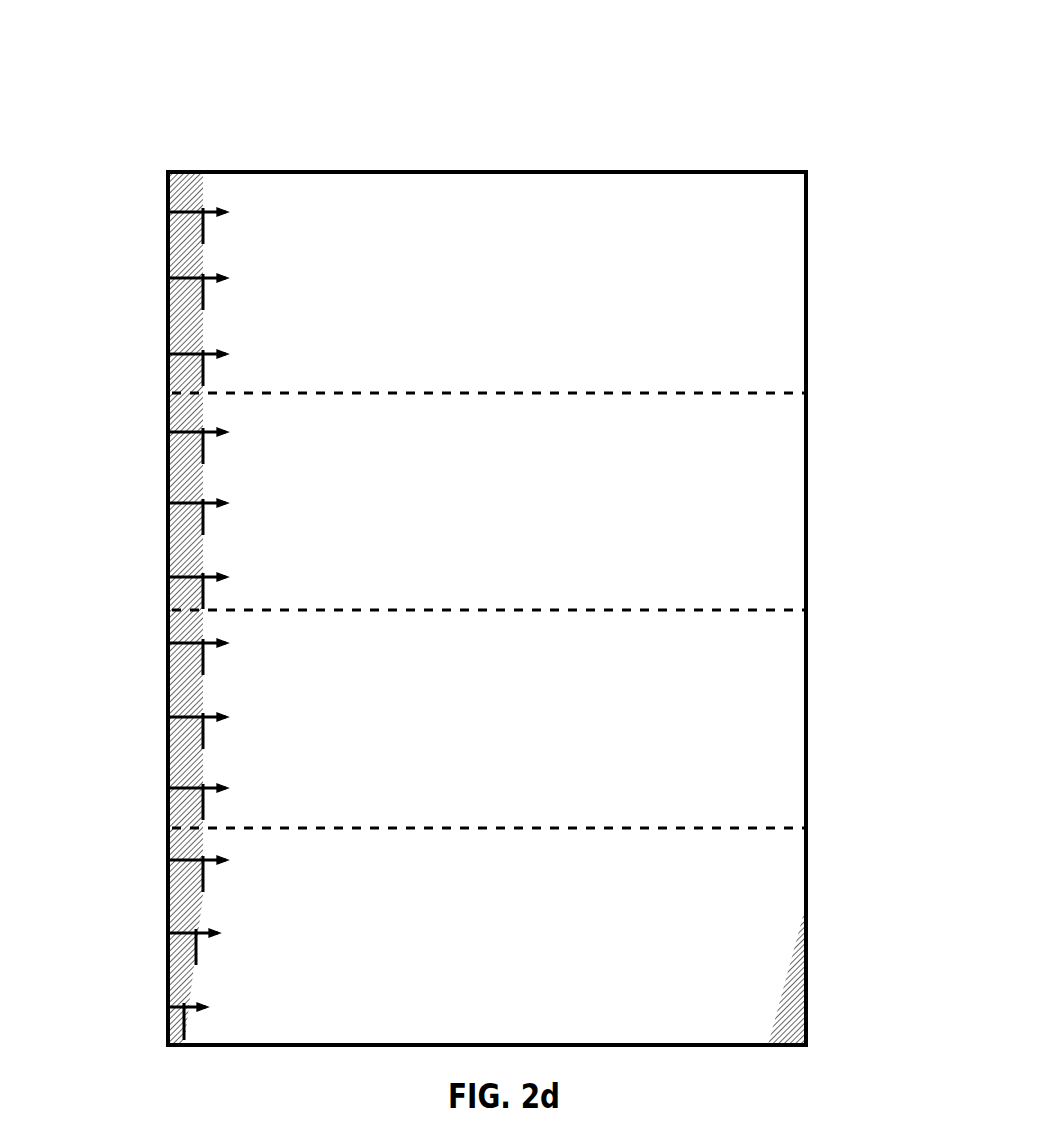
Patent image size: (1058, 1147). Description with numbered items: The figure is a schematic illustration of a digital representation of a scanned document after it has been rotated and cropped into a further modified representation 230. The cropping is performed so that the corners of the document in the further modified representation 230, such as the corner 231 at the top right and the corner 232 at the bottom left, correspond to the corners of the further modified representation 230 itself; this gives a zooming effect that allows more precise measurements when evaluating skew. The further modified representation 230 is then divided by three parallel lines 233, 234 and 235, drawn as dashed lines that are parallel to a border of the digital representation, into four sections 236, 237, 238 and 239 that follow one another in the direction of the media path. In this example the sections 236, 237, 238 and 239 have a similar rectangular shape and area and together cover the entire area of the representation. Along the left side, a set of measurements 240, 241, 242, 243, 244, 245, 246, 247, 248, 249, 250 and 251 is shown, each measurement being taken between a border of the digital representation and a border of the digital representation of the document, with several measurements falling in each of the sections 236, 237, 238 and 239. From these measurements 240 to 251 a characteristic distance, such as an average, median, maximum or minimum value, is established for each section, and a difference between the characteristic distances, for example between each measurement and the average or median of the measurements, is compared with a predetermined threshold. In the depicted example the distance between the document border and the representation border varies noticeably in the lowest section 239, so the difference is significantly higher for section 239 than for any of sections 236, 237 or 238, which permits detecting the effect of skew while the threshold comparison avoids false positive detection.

The further modified representation 230 is at (762, 96).
The corner of the document 231 is at (807, 172).
The corner of the document 232 is at (168, 1045).
The parallel line 233 is at (775, 393).
The parallel line 234 is at (780, 610).
The parallel line 235 is at (781, 828).
The section 236 is at (758, 216).
The section 237 is at (757, 442).
The section 238 is at (753, 660).
The section 239 is at (753, 877).
The measurement 240 is at (166, 212).
The measurement 241 is at (166, 278).
The measurement 242 is at (166, 354).
The measurement 243 is at (166, 432).
The measurement 244 is at (166, 503).
The measurement 245 is at (166, 577).
The measurement 246 is at (166, 643).
The measurement 247 is at (166, 717).
The measurement 248 is at (166, 788).
The measurement 249 is at (166, 860).
The measurement 250 is at (166, 933).
The measurement 251 is at (166, 1007).